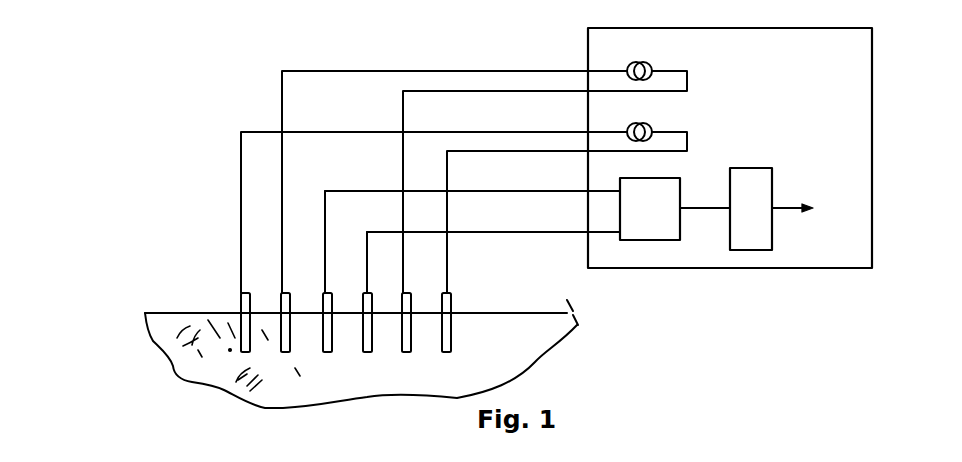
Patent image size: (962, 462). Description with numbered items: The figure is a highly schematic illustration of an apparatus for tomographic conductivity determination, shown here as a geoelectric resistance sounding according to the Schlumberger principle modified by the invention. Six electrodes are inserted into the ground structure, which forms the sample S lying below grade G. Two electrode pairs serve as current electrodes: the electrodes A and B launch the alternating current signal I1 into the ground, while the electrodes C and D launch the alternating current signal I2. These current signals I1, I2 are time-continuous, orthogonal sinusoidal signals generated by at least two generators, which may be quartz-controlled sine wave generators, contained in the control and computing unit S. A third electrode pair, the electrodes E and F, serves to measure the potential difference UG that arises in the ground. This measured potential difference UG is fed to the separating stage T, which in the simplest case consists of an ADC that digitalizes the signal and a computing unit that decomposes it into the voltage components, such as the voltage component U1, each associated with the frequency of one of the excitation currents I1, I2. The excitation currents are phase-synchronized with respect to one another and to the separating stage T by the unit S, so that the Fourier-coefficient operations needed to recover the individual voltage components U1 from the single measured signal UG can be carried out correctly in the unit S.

The sample / control and computing unit S is at (150, 407).
The grade G is at (145, 313).
The first alternating current signal I1 is at (650, 60).
The second alternating current signal I2 is at (650, 121).
The analog-digital-converter ADC is at (650, 209).
The separating stage T is at (726, 209).
The voltage component U1 is at (802, 196).
The potential difference UG is at (472, 211).
The electrode A is at (445, 211).
The electrode B is at (536, 211).
The electrode C is at (424, 242).
The electrode D is at (556, 242).
The electrode E is at (318, 271).
The electrode F is at (358, 292).